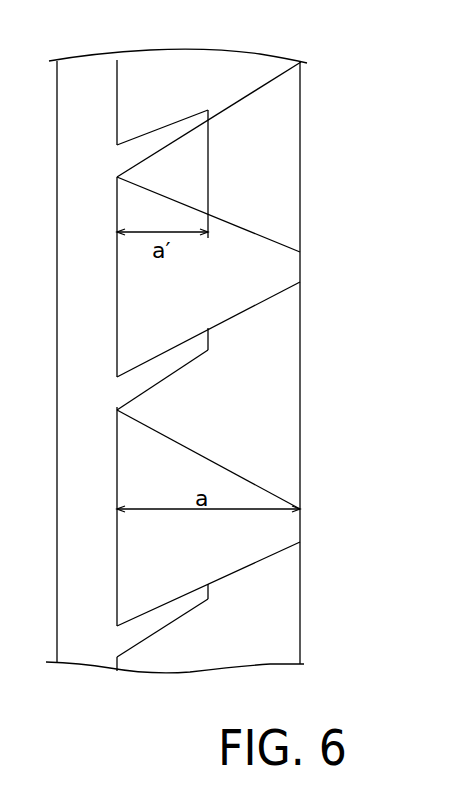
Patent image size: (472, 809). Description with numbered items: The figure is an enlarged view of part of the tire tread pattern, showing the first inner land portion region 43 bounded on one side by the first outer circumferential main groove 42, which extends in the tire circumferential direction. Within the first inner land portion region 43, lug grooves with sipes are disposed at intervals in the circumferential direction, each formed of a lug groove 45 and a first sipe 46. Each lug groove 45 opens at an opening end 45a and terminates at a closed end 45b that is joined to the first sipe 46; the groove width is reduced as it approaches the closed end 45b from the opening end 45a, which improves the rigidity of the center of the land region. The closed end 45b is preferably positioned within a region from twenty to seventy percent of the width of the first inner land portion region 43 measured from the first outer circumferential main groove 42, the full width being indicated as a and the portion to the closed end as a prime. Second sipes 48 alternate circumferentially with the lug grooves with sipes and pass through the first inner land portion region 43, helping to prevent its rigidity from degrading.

The first outer circumferential main groove 42 is at (81, 88).
The first inner land portion region 43 is at (137, 81).
The lug groove 45 is at (163, 139).
The opening end 45a is at (122, 157).
The closed end 45b is at (214, 117).
The first sipe 46 is at (262, 82).
The second sipe 48 is at (262, 238).